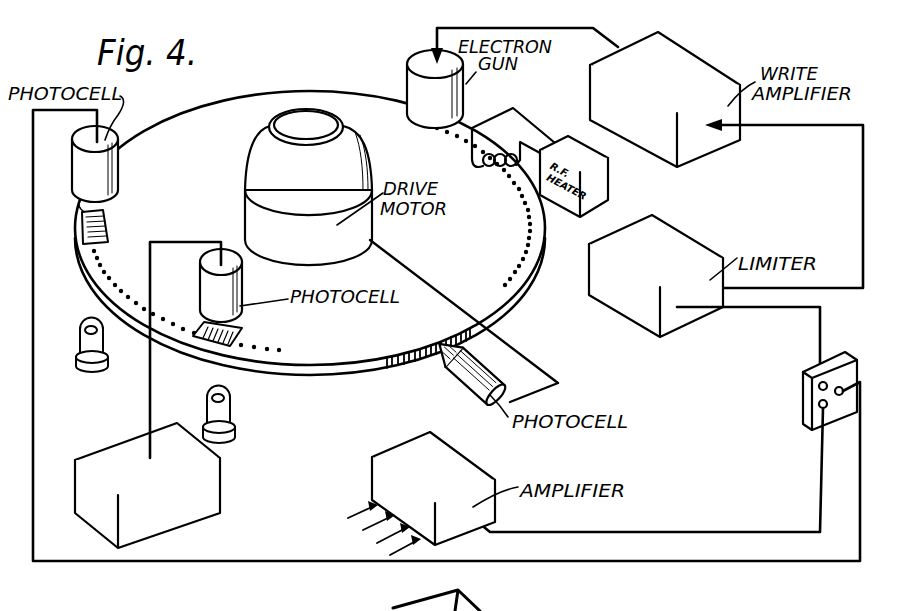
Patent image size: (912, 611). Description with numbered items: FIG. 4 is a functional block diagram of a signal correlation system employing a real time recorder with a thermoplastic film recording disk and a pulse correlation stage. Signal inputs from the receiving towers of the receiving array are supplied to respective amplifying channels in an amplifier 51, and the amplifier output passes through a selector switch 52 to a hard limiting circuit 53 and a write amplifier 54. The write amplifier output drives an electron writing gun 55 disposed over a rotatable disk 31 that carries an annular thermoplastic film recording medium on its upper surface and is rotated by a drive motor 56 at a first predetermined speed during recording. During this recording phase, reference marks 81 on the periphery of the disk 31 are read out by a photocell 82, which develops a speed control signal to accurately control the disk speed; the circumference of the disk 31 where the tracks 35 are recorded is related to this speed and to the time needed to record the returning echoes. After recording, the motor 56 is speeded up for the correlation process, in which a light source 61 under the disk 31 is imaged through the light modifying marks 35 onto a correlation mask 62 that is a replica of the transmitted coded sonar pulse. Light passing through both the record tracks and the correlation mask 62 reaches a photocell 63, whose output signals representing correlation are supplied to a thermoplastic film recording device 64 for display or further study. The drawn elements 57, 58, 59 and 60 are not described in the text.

The rotatable disk 31 is at (507, 287).
The tracks 35 is at (527, 223).
The amplifier 51 is at (382, 478).
The selector switch 52 is at (803, 393).
The hard limiting circuit 53 is at (683, 240).
The write amplifier 54 is at (707, 77).
The electron writing gun 55 is at (413, 85).
The drive motor 56 is at (320, 195).
The lamp 57 is at (82, 342).
The slotted plate 58 is at (107, 224).
The photocell 59 is at (107, 170).
The conductor 60 is at (278, 561).
The light source 61 is at (233, 403).
The correlation mask 62 is at (238, 337).
The photocell 63 is at (240, 288).
The thermoplastic film recording device 64 is at (218, 480).
The reference marks 81 is at (398, 364).
The photocell 82 is at (462, 388).